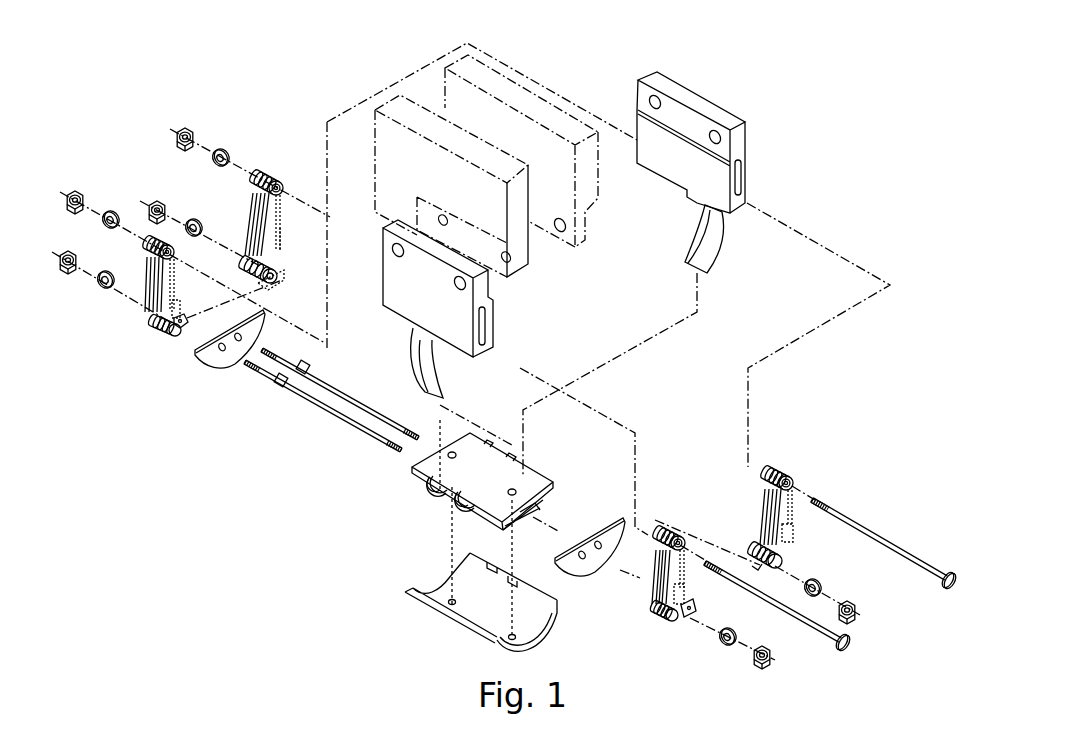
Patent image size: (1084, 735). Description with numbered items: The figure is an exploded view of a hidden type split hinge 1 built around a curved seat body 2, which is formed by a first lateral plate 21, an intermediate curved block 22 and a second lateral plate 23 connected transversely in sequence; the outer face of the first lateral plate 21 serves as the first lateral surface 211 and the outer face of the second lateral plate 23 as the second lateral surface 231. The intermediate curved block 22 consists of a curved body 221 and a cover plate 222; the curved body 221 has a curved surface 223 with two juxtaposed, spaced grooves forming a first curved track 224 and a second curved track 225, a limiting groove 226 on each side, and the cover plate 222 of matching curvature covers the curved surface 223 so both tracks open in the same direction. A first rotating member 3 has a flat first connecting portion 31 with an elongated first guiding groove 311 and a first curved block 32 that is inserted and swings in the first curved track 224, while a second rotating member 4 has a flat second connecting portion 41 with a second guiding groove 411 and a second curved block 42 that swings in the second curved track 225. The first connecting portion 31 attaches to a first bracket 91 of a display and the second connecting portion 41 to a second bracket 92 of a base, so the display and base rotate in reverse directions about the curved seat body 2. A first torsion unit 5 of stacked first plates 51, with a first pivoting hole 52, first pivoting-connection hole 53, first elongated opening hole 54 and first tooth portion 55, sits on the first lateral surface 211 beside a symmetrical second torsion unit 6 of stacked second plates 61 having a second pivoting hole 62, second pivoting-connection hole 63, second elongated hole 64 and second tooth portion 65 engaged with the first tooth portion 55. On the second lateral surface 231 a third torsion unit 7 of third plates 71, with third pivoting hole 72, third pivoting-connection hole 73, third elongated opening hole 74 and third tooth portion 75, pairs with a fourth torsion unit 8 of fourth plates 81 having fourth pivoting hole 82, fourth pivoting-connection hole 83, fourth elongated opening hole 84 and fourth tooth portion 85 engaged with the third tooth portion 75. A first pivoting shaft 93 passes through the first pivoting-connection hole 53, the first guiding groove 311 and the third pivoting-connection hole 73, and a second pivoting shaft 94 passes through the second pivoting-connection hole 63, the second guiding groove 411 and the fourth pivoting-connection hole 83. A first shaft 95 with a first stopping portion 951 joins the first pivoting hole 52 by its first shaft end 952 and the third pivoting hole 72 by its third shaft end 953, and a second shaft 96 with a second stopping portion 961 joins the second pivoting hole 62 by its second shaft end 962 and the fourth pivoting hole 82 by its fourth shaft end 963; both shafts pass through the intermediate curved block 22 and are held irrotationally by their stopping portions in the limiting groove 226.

The hidden type split hinge 1 is at (884, 151).
The curved seat body 2 is at (446, 525).
The first lateral plate 21 is at (591, 574).
The first lateral surface 211 is at (573, 575).
The intermediate curved block 22 is at (431, 565).
The curved body 221 is at (427, 488).
The cover plate 222 is at (343, 542).
The curved surface 223 is at (483, 510).
The first curved track 224 is at (474, 465).
The second curved track 225 is at (500, 455).
The limiting groove 226 is at (420, 485).
The second lateral plate 23 is at (191, 347).
The second lateral surface 231 is at (198, 358).
The first rotating member 3 is at (716, 165).
The first connecting portion 31 is at (716, 142).
The first guiding groove 311 is at (742, 178).
The first curved block 32 is at (720, 255).
The second rotating member 4 is at (440, 309).
The second connecting portion 41 is at (467, 288).
The second guiding groove 411 is at (486, 326).
The second curved block 42 is at (428, 372).
The first torsion unit 5 is at (777, 500).
The first plates 51 is at (768, 468).
The first pivoting hole 52 is at (782, 563).
The first pivoting-connection hole 53 is at (792, 486).
The first elongated opening hole 54 is at (794, 538).
The first tooth portion 55 is at (752, 562).
The second torsion unit 6 is at (662, 580).
The second plates 61 is at (660, 528).
The second pivoting hole 62 is at (690, 620).
The second pivoting-connection hole 63 is at (683, 545).
The second elongated hole 64 is at (685, 594).
The second tooth portion 65 is at (668, 622).
The third torsion unit 7 is at (259, 201).
The third plate 71 is at (283, 182).
The third pivoting hole 72 is at (250, 262).
The third pivoting-connection hole 73 is at (281, 190).
The third elongated opening hole 74 is at (283, 240).
The third tooth portion 75 is at (246, 270).
The fourth torsion unit 8 is at (150, 289).
The fourth plates 81 is at (158, 245).
The fourth pivoting hole 82 is at (179, 312).
The fourth pivoting-connection hole 83 is at (150, 252).
The fourth elongated opening hole 84 is at (155, 320).
The fourth tooth portion 85 is at (182, 320).
The first bracket 91 is at (530, 98).
The second bracket 92 is at (525, 240).
The first pivoting shaft 93 is at (912, 556).
The second pivoting shaft 94 is at (800, 628).
The first shaft 95 is at (301, 383).
The first stopping portion 951 is at (303, 362).
The first shaft end 952 is at (412, 432).
The third shaft end 953 is at (266, 360).
The second shaft 96 is at (298, 416).
The second stopping portion 961 is at (280, 385).
The second shaft end 962 is at (384, 446).
The fourth shaft end 963 is at (252, 370).